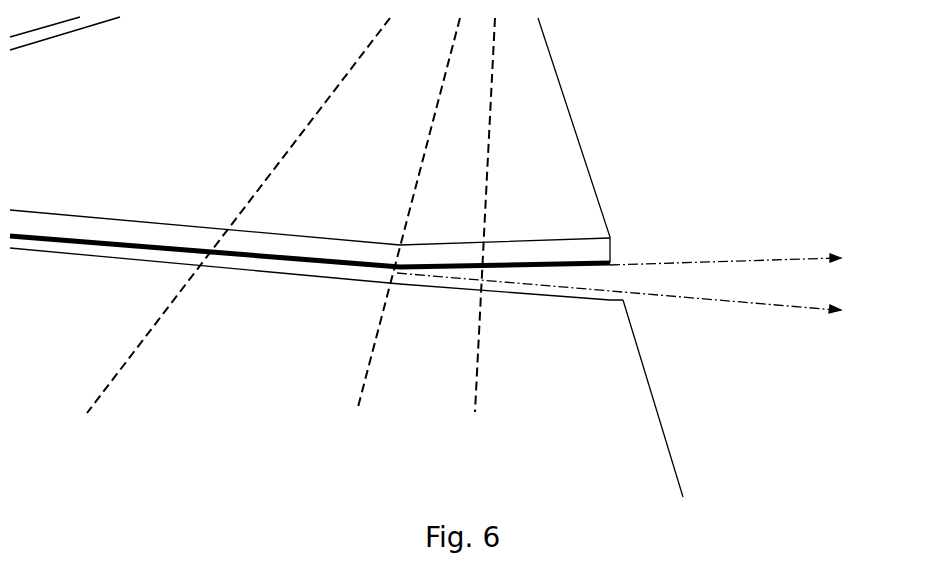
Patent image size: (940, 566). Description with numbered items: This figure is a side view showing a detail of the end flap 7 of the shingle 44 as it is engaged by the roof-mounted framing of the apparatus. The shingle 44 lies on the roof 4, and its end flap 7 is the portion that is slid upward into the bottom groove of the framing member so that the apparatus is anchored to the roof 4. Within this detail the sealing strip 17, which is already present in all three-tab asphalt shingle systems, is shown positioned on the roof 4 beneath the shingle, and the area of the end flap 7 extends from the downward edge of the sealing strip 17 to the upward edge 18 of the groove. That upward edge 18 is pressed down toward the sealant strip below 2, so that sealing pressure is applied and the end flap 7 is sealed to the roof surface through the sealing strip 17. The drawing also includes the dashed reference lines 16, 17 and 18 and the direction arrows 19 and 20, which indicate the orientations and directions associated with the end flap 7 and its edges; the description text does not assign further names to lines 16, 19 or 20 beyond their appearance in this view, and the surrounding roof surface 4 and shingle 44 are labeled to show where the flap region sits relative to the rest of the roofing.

The sealant strip below 2 is at (284, 265).
The roof 4 is at (660, 193).
The end flap 7 is at (520, 154).
The first direction line 16 is at (234, 229).
The sealing strip 17 is at (403, 227).
The upward edge of the groove 18 is at (479, 228).
The first direction arrow 19 is at (737, 259).
The second direction arrow 20 is at (632, 297).
The shingle 44 is at (195, 134).